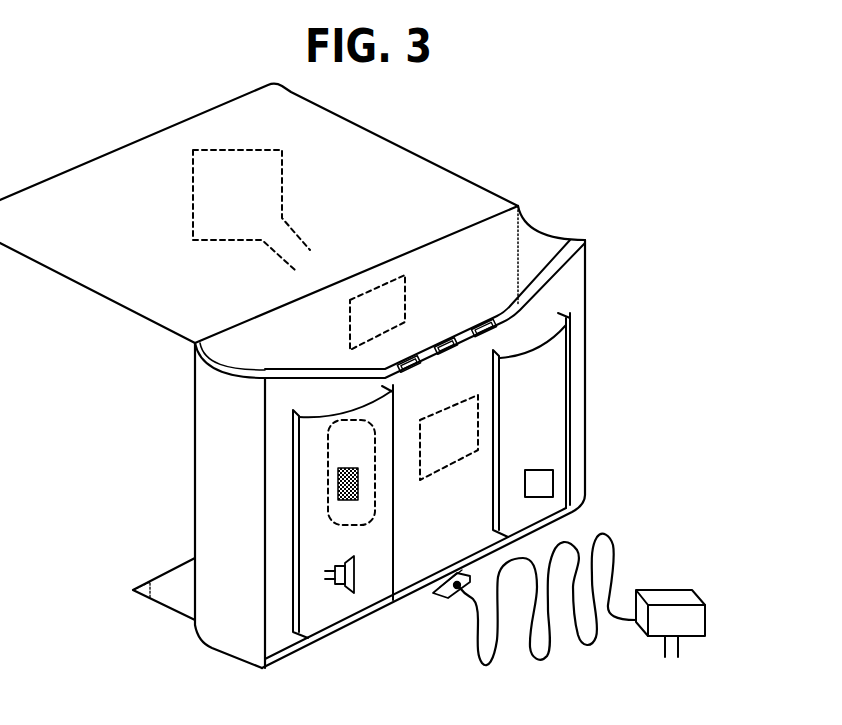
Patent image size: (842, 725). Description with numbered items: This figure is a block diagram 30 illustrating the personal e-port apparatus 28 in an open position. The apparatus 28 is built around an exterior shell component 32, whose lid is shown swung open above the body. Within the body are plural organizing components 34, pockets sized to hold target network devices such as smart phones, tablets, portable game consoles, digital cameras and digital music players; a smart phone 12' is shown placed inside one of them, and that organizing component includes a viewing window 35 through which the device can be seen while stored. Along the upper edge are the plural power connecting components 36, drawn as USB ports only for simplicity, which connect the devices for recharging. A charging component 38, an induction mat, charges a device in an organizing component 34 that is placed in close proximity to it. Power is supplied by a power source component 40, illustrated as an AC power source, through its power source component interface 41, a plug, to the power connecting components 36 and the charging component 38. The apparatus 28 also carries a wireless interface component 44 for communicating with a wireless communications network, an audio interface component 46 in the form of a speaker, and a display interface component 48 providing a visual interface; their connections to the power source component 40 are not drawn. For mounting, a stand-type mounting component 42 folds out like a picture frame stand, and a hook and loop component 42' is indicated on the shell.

The block diagram 30 is at (630, 73).
The exterior shell component 32 is at (117, 172).
The wireless interface component 44 is at (193, 185).
The personal e-port apparatus 28 is at (193, 432).
The power connecting components 36 is at (485, 325).
The hook and loop component 42' is at (377, 312).
The charging component 38 is at (449, 437).
The organizing components 34 is at (431, 290).
The smart phone 12' is at (325, 455).
The viewing window 35 is at (338, 485).
The display interface component 48 is at (542, 483).
The mounting component 42 is at (128, 599).
The audio interface component 46 is at (340, 592).
The power source component interface 41 is at (441, 594).
The power source component 40 is at (678, 590).